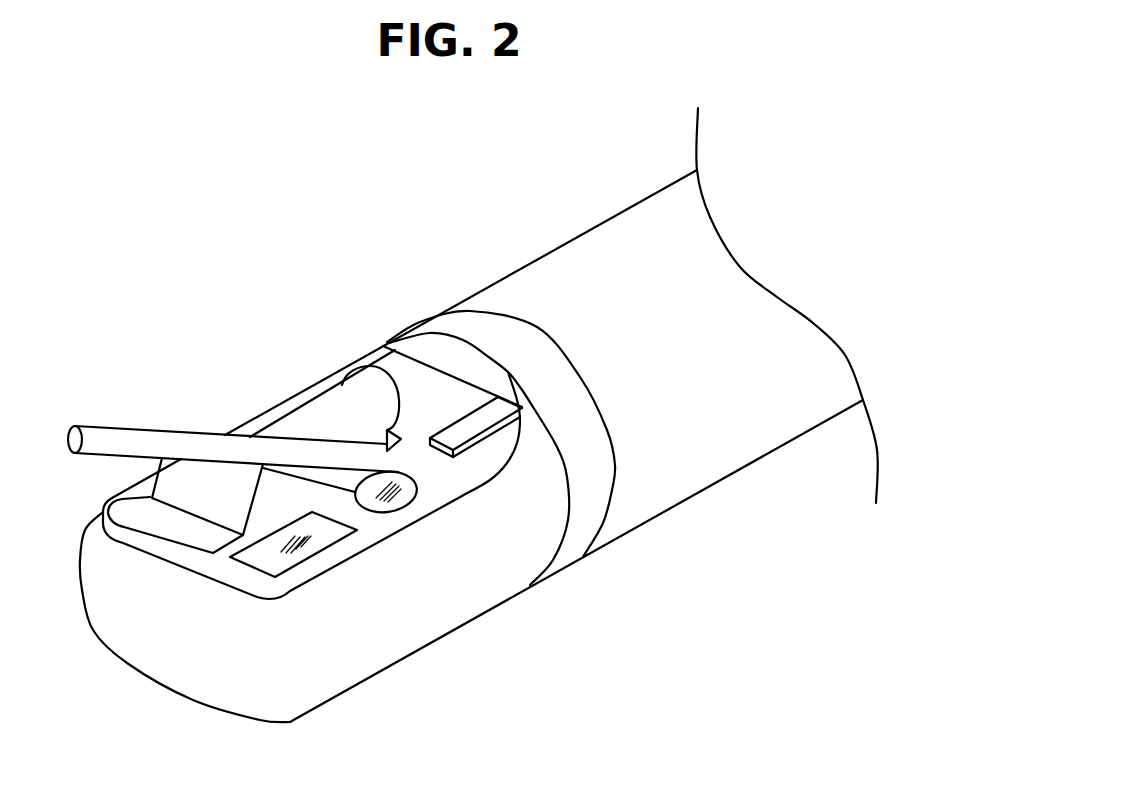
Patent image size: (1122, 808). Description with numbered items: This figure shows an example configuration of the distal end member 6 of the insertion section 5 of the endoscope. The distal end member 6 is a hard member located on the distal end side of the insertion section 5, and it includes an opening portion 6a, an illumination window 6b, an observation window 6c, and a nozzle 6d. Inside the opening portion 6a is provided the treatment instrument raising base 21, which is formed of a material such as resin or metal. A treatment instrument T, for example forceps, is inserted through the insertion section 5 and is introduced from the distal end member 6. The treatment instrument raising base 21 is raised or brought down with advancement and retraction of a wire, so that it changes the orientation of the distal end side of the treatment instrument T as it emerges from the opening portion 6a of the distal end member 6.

The insertion section 5 is at (577, 275).
The distal end member 6 is at (327, 421).
The opening portion 6a is at (347, 393).
The illumination window 6b is at (353, 551).
The observation window 6c is at (406, 508).
The nozzle 6d is at (490, 438).
The treatment instrument raising base 21 is at (207, 496).
The treatment instrument T is at (92, 426).